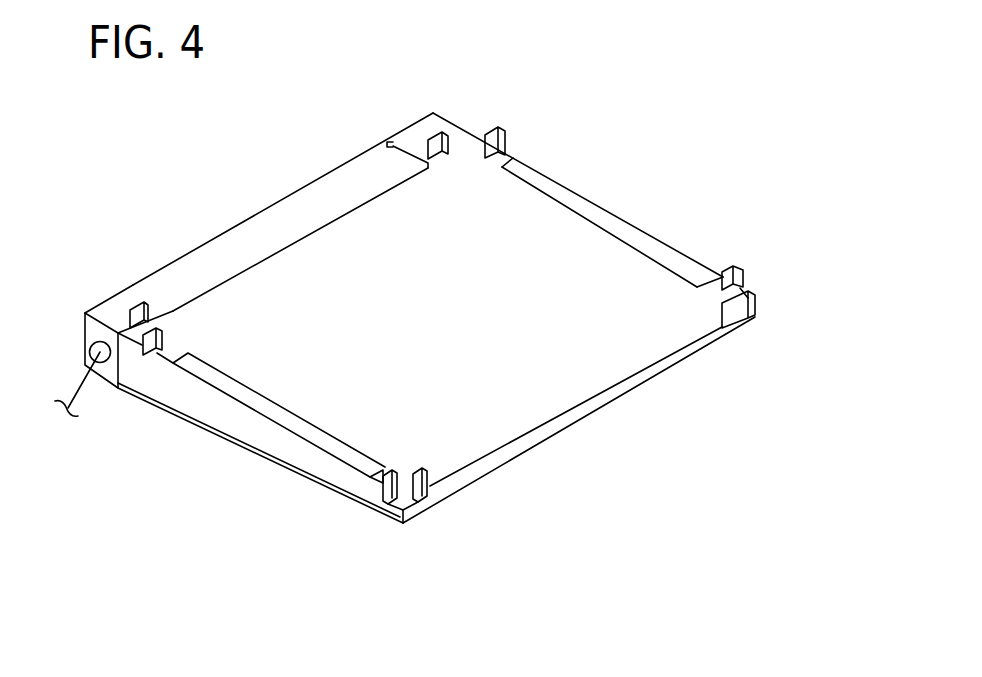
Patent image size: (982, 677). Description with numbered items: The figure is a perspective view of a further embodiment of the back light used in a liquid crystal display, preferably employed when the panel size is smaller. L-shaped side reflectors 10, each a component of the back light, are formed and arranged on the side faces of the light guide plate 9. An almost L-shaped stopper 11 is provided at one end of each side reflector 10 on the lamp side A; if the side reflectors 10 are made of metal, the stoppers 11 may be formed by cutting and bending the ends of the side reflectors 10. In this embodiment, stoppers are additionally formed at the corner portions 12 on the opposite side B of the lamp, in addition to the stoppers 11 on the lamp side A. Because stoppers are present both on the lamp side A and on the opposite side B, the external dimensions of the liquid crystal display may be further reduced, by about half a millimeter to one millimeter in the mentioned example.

The light guide plate 9 is at (447, 326).
The side reflector 10 is at (414, 318).
The stopper 11 is at (315, 225).
The corner portion 12 is at (599, 418).
The lamp side A is at (283, 208).
The opposite side of the lamp B is at (579, 420).